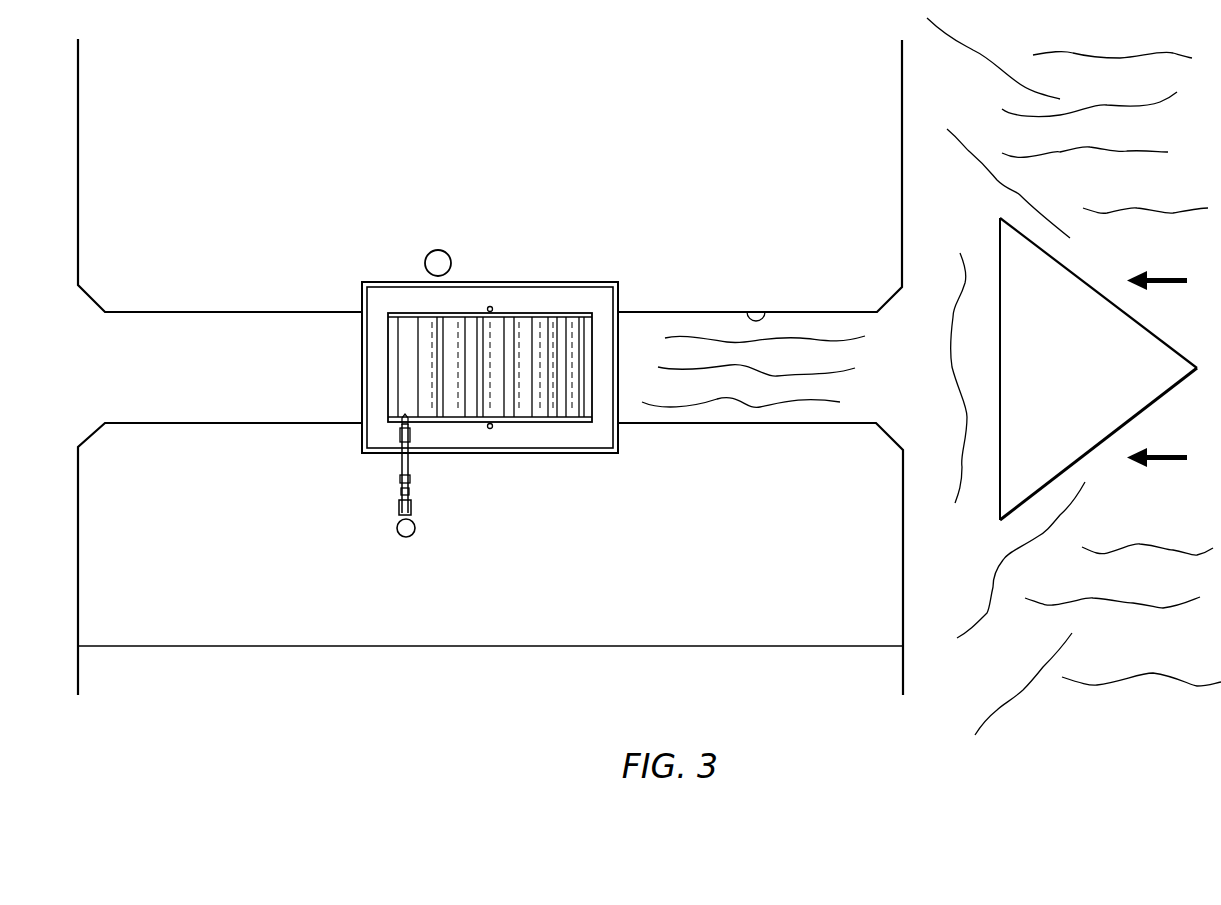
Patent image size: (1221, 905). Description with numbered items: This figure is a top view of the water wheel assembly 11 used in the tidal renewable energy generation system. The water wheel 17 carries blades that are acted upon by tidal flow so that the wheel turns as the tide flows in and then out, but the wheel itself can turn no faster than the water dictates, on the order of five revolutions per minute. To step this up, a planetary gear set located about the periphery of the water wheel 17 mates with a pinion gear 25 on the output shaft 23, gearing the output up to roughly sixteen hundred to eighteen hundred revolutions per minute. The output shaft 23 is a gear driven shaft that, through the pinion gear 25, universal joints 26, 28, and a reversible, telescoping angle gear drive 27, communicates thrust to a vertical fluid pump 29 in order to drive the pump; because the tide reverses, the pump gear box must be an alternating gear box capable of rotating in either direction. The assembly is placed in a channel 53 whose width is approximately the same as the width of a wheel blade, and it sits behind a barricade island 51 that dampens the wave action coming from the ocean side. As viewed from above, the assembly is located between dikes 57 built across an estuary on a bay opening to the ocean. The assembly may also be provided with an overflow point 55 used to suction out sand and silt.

The water wheel assembly 11 is at (553, 230).
The water wheel 17 is at (407, 368).
The output shaft 23 is at (409, 464).
The pinion gear 25 is at (404, 416).
The universal joint 26 is at (400, 479).
The reversible gear drive angle drive 27 is at (398, 507).
The universal joint 28 is at (410, 492).
The vertical fluid pump 29 is at (405, 538).
The barricade island 51 is at (1173, 347).
The channel 53 is at (765, 312).
The overflow point 55 is at (438, 250).
The dike 57 is at (490, 638).